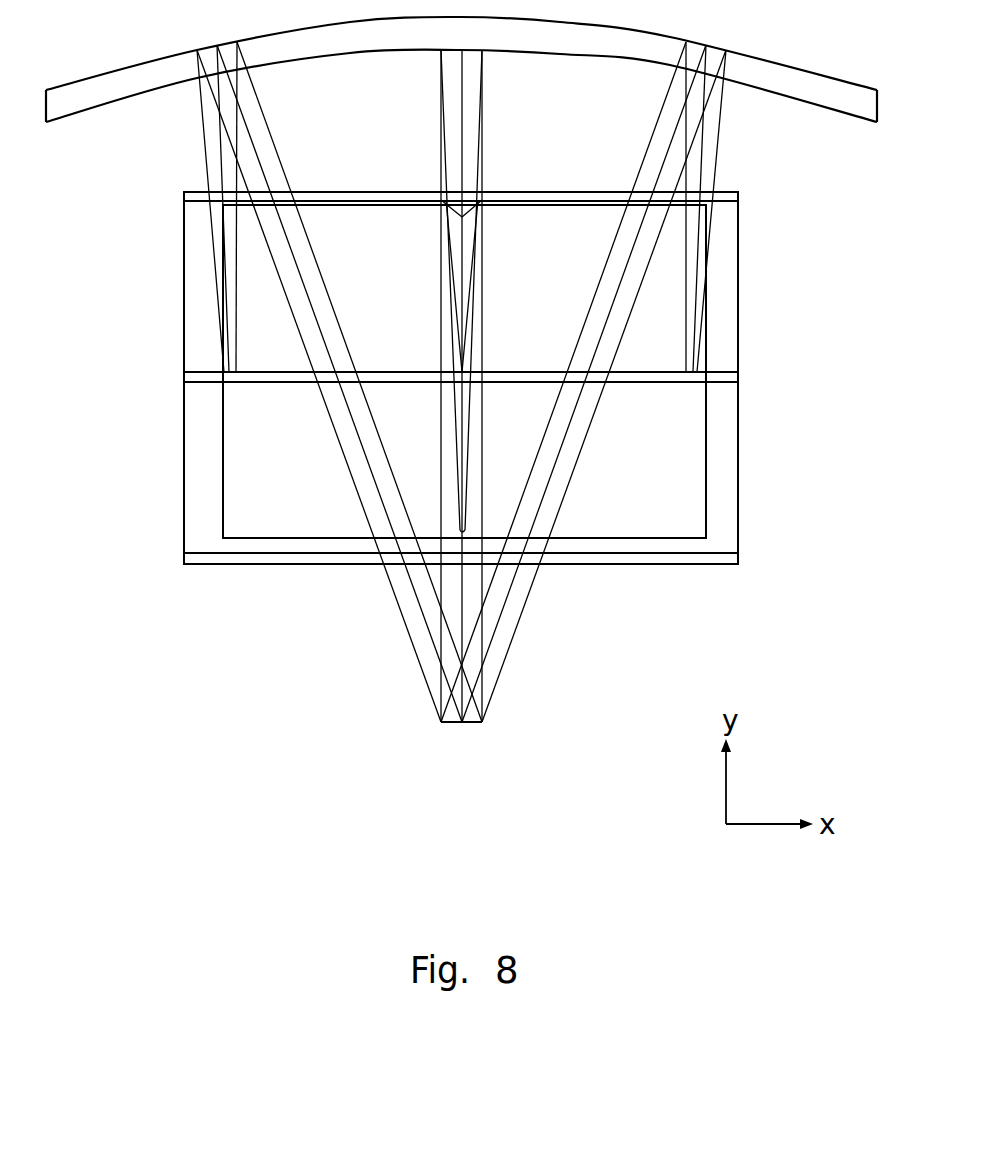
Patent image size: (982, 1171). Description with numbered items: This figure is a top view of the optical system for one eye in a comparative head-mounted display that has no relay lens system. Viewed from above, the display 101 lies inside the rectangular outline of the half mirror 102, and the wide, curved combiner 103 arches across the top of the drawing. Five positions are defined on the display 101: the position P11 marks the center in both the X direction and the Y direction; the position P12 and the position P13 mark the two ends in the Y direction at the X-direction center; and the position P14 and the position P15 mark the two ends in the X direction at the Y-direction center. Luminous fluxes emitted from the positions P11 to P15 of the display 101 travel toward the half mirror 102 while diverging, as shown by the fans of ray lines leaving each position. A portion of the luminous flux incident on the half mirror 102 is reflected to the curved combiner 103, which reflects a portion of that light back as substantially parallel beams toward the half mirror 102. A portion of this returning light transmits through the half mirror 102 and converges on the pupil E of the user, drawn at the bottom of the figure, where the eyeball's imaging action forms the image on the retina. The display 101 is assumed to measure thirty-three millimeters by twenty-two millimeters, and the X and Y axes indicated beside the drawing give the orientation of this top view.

The curved combiner 103 is at (92, 104).
The half mirror 102 is at (225, 564).
The display 101 is at (316, 540).
The position P11 is at (463, 373).
The position P12 is at (460, 530).
The position P13 is at (463, 217).
The position P14 is at (230, 378).
The position P15 is at (690, 376).
The pupil E is at (468, 724).